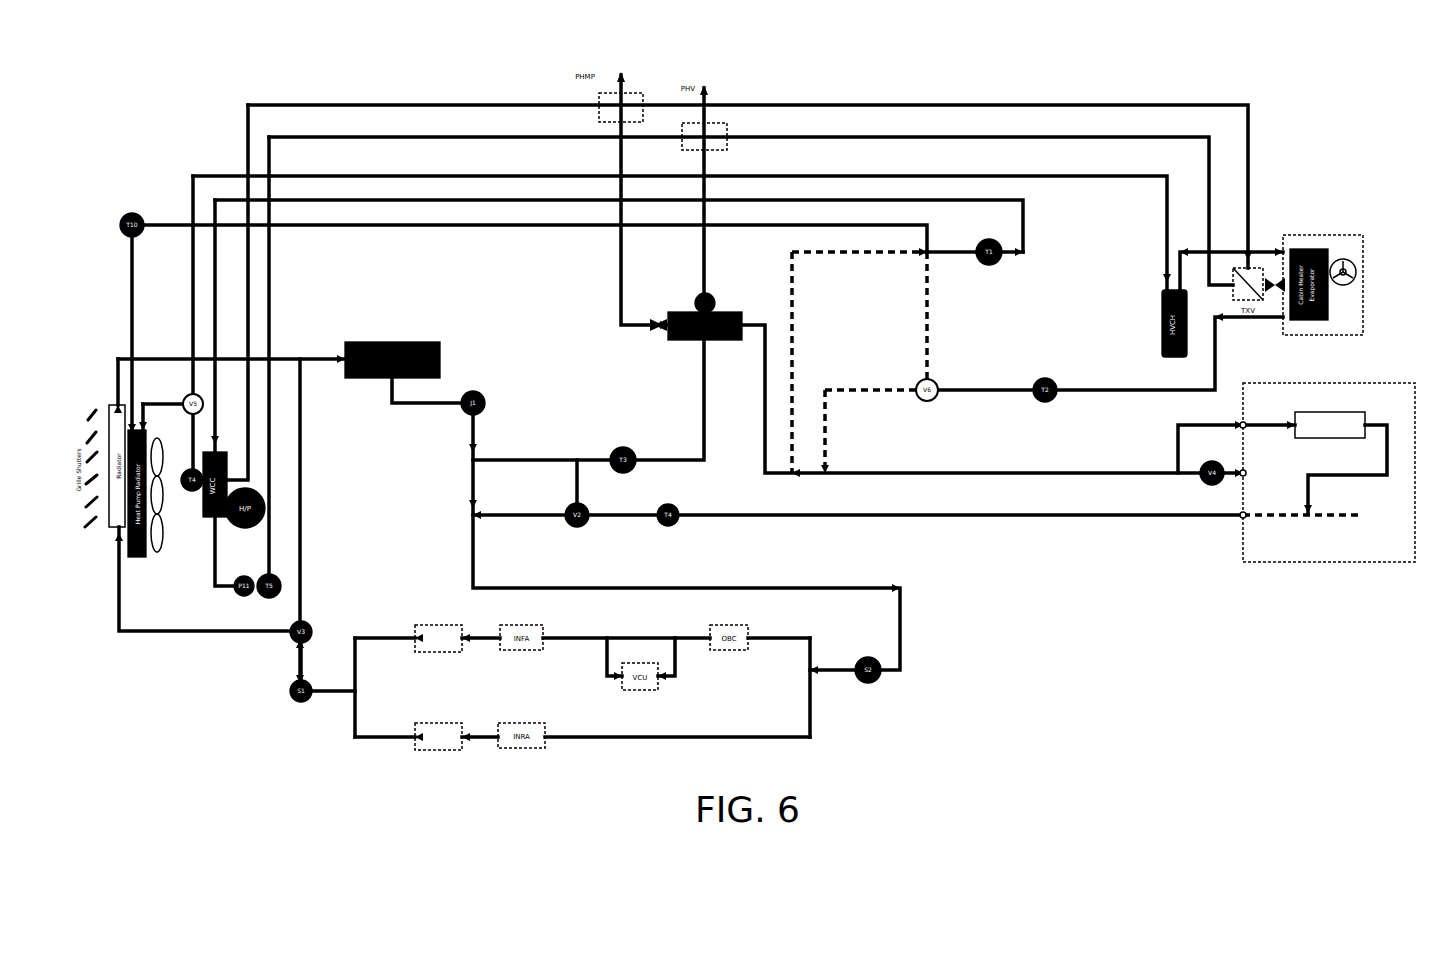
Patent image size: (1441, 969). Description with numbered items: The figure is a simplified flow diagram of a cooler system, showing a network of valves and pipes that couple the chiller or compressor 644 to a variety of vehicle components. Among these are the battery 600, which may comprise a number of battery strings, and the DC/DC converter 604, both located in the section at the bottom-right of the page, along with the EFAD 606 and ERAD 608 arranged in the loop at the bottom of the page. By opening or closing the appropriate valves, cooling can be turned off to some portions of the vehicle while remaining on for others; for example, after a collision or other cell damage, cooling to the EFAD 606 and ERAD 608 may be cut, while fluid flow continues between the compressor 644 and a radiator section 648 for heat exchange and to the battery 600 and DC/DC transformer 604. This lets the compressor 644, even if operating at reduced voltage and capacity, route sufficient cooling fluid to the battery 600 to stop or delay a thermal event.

The battery 600 is at (1280, 562).
The DC/DC converter 604 is at (1373, 410).
The EFAD 606 is at (415, 625).
The ERAD 608 is at (415, 740).
The chiller or compressor 644 is at (662, 337).
The radiator section 648 is at (287, 342).